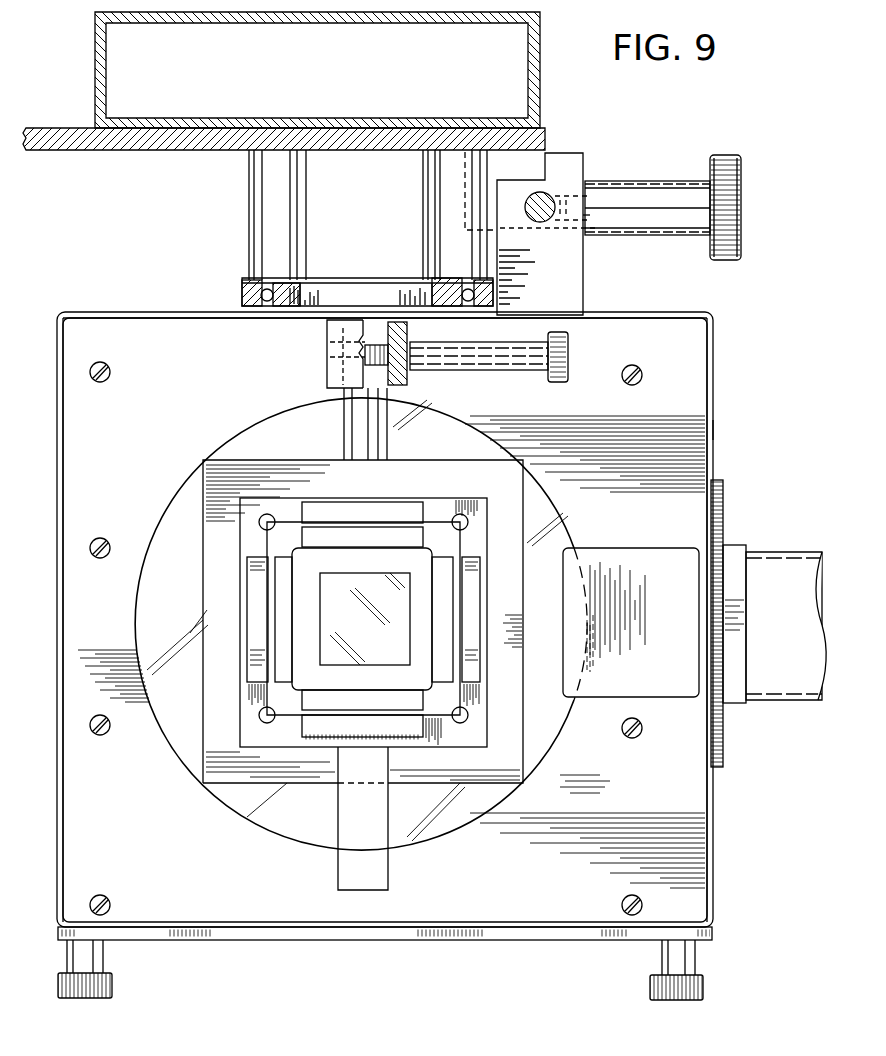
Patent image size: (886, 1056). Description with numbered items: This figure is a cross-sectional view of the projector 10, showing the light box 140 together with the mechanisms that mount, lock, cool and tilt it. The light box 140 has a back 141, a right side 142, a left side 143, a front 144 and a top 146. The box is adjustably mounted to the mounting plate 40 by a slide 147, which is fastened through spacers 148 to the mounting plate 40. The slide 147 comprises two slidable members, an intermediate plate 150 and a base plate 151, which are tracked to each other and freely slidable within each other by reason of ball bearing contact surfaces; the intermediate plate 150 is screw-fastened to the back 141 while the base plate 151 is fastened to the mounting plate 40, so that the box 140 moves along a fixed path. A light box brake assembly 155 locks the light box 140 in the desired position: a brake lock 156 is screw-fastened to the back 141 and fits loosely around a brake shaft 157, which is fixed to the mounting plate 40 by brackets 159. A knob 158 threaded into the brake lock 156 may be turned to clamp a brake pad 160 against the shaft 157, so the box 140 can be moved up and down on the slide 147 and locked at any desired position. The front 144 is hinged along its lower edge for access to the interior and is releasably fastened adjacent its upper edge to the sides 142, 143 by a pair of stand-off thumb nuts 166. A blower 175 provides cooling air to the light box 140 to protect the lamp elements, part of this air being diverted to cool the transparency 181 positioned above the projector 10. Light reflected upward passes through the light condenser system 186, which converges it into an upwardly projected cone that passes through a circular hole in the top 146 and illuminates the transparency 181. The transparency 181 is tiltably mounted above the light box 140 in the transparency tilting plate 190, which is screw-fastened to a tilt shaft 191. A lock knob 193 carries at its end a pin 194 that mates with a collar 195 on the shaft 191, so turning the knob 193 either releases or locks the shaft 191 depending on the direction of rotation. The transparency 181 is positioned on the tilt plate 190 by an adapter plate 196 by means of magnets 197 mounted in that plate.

The projector 10 is at (723, 418).
The mounting plate 40 is at (108, 143).
The light box 140 is at (718, 887).
The back 141 is at (622, 312).
The right side 142 is at (712, 810).
The left side 143 is at (56, 728).
The front 144 is at (400, 935).
The top 146 is at (240, 895).
The slide 147 is at (240, 281).
The spacers 148 is at (268, 201).
The intermediate plate 150 is at (330, 293).
The base plate 151 is at (252, 297).
The light box brake assembly 155 is at (592, 147).
The brake lock 156 is at (572, 274).
The brake shaft 157 is at (543, 191).
The knob 158 is at (727, 158).
The brackets 159 is at (501, 162).
The brake pad 160 is at (590, 180).
The stand-off thumb nuts 166 is at (100, 997).
The blower 175 is at (778, 565).
The transparency 181 is at (391, 651).
The light condenser system 186 is at (455, 823).
The transparency tilting plate 190 is at (228, 768).
The tilt shaft 191 is at (370, 443).
The lock knob 193 is at (520, 358).
The pin 194 is at (405, 339).
The collar 195 is at (327, 354).
The adapter plate 196 is at (275, 546).
The magnets 197 is at (270, 514).